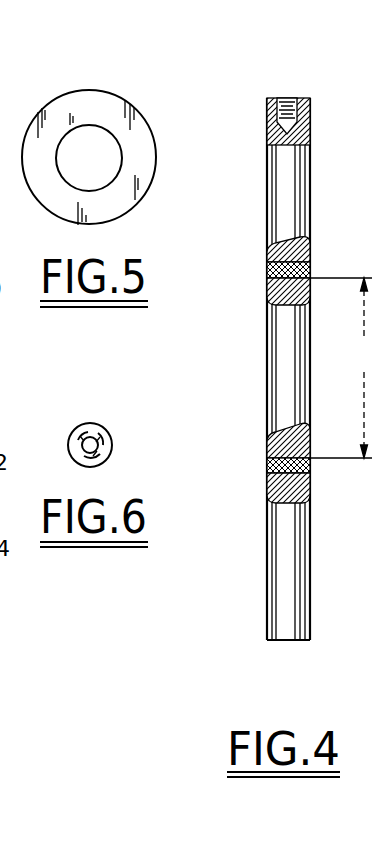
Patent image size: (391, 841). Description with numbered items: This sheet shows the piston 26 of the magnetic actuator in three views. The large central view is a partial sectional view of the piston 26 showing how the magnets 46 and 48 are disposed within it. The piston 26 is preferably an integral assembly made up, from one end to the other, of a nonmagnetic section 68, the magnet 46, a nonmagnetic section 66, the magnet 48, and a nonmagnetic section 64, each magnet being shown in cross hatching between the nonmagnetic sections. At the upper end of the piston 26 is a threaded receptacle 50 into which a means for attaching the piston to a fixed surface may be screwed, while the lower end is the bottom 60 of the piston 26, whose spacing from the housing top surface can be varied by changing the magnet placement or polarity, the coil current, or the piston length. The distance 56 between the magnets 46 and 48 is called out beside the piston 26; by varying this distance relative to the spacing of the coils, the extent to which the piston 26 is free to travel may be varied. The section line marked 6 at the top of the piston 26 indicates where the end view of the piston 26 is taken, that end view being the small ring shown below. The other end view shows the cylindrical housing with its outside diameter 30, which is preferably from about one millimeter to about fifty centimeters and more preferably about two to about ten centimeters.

In FIG. 4, the section line 6 is at (352, 98).
In FIG. 4, the piston 26 is at (267, 199).
In FIG. 5, the outside diameter 30 is at (157, 142).
In FIG. 4, the magnet 46 is at (267, 272).
In FIG. 4, the magnet 48 is at (270, 463).
In FIG. 4, the threaded receptacle 50 is at (270, 126).
In FIG. 4, the distance between magnets 56 is at (344, 368).
In FIG. 4, the bottom of piston 60 is at (290, 642).
In FIG. 4, the nonmagnetic section 64 is at (285, 562).
In FIG. 4, the nonmagnetic section 66 is at (290, 340).
In FIG. 4, the nonmagnetic section 68 is at (313, 199).